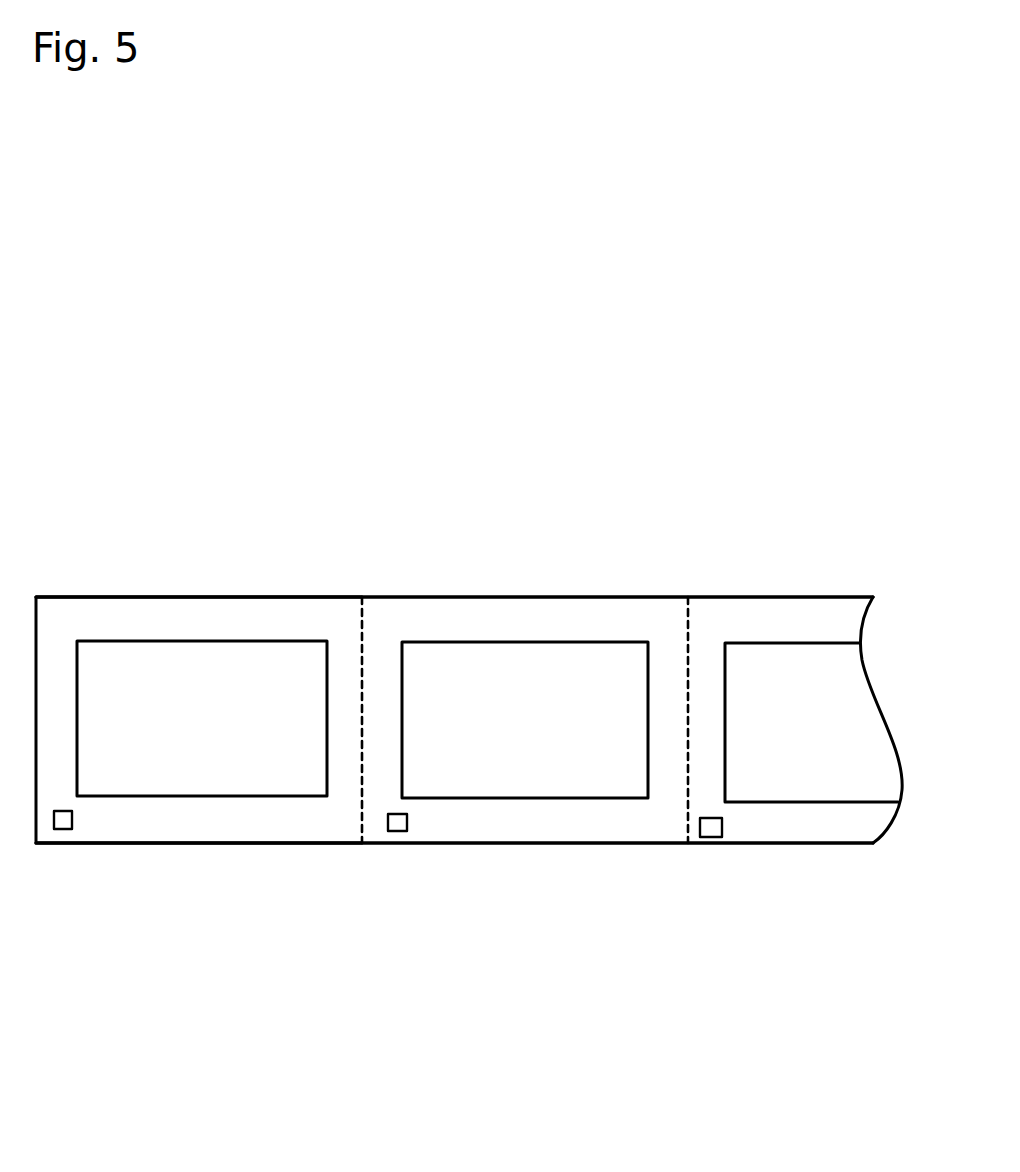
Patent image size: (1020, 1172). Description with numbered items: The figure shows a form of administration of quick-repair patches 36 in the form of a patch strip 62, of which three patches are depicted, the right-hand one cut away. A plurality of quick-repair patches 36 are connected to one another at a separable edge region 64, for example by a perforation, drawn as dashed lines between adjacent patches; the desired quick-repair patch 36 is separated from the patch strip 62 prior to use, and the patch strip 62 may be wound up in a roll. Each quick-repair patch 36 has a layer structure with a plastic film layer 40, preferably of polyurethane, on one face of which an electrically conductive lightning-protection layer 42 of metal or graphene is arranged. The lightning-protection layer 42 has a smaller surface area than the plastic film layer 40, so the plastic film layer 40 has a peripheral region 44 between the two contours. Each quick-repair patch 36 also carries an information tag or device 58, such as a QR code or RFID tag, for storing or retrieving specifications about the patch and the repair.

The patch strip 62 is at (156, 548).
The quick-repair patch 36 is at (270, 597).
The plastic film layer 40 is at (307, 607).
The separable edge region 64 is at (686, 590).
The lightning-protection layer 42 is at (160, 784).
The peripheral region 44 is at (252, 820).
The information tag or device 58 is at (62, 830).